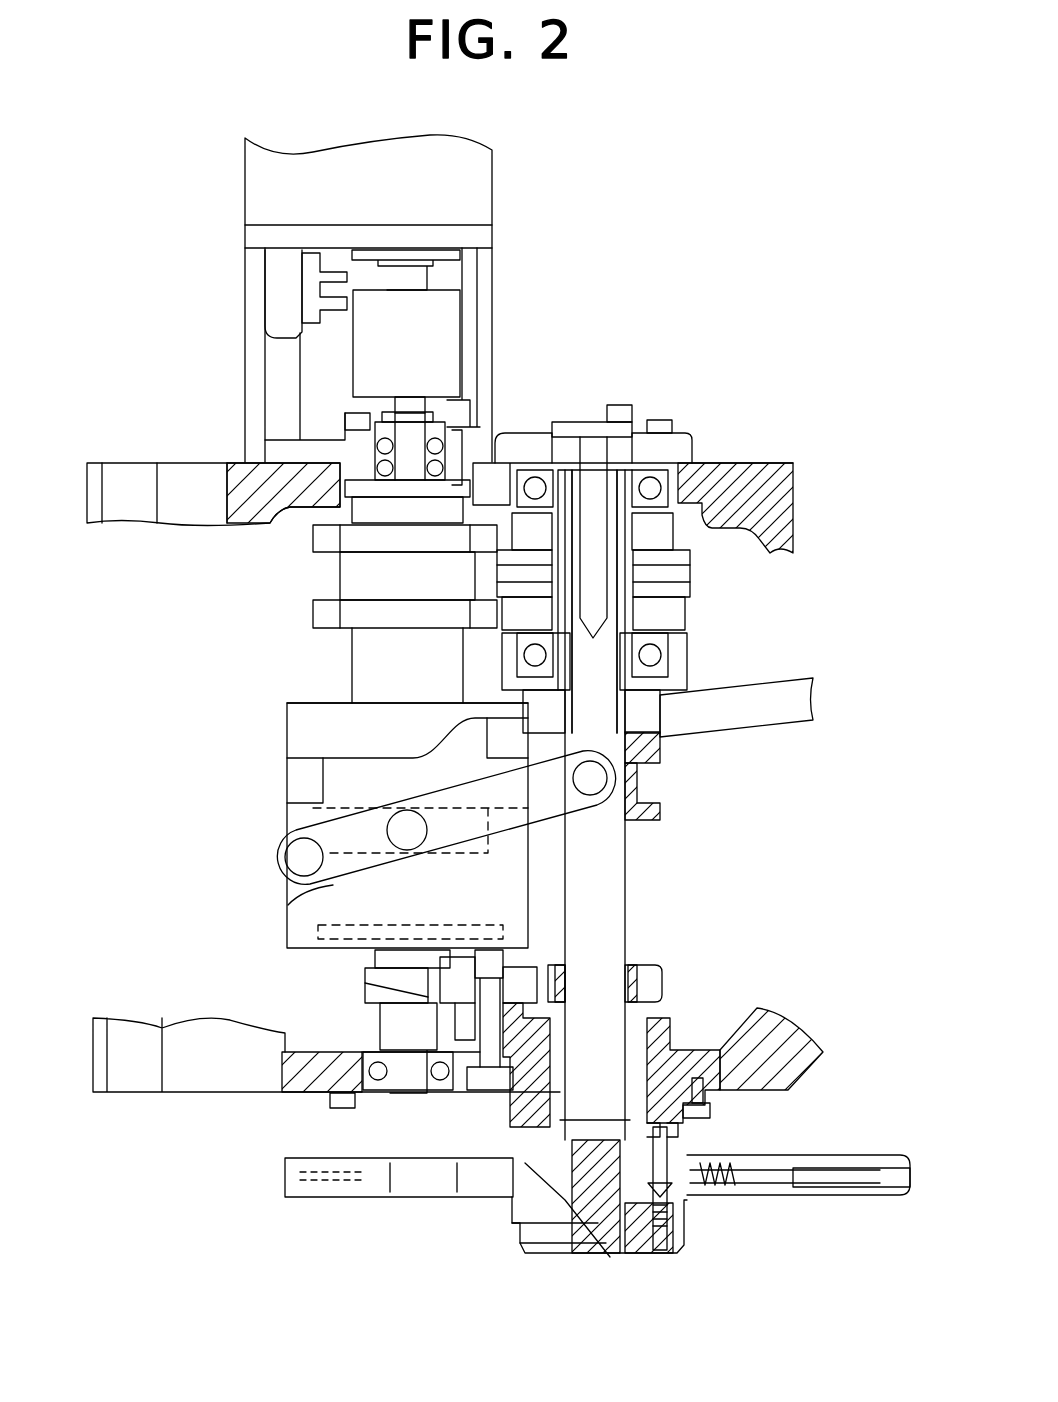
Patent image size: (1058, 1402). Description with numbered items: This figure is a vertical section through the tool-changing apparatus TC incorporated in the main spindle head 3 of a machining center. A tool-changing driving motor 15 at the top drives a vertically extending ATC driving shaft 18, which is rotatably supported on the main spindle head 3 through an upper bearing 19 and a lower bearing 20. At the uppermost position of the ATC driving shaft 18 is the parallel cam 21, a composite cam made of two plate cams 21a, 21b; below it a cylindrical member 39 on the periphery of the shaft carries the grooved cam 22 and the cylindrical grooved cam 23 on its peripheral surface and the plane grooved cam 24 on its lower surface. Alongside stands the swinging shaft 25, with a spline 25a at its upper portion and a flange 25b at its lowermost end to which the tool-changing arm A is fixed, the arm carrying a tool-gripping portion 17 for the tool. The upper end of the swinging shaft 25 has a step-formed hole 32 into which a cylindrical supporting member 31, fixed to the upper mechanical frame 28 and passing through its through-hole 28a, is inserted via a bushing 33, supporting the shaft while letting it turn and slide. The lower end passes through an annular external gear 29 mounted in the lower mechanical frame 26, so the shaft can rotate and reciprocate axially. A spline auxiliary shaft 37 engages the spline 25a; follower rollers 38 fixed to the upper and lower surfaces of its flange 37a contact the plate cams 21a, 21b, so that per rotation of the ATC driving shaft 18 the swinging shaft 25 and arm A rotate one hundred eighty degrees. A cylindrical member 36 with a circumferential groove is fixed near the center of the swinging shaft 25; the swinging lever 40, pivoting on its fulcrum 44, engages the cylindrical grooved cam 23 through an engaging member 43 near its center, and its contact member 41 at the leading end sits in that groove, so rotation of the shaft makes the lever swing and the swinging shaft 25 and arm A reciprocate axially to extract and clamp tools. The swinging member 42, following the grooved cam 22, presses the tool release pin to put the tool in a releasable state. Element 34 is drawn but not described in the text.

The tool-changing apparatus TC is at (160, 330).
The tool-changing driving motor 15 is at (490, 195).
The ATC driving shaft 18 is at (360, 405).
The bearing 19 is at (464, 472).
The parallel cam 21 is at (344, 614).
The plate cam 21a is at (326, 540).
The plate cam 21b is at (326, 604).
The cylindrical member 39 is at (300, 702).
The grooved cam 22 is at (358, 834).
The cylindrical grooved cam 23 is at (310, 820).
The plane grooved cam 24 is at (318, 938).
The fulcrum 44 is at (402, 838).
The swinging lever 40 is at (305, 908).
The engaging member 43 is at (397, 850).
The pin 34 is at (428, 968).
The swinging shaft 25 is at (640, 711).
The cylindrical supporting member 31 is at (585, 425).
The step-formed hole 32 is at (618, 468).
The bushing 33 is at (628, 467).
The through-hole 28a is at (598, 505).
The spline 25a is at (563, 478).
The spline auxiliary shaft 37 is at (688, 455).
The follower roller 38 is at (673, 533).
The flange 37a is at (693, 573).
The upper mechanical frame 28 is at (690, 452).
The swinging member 42 is at (790, 672).
The cylindrical member 36 is at (660, 748).
The contact member 41 is at (637, 781).
The external gear 29 is at (662, 978).
The flange 25b is at (513, 1120).
The lower mechanical frame 26 is at (720, 1093).
The main spindle head 3 is at (288, 1070).
The bearing 20 is at (353, 1077).
The tool-gripping portion 17 is at (402, 1197).
The tool-changing arm A is at (530, 1262).